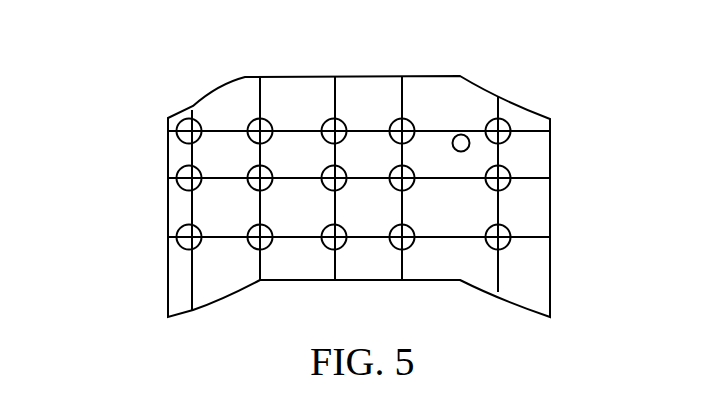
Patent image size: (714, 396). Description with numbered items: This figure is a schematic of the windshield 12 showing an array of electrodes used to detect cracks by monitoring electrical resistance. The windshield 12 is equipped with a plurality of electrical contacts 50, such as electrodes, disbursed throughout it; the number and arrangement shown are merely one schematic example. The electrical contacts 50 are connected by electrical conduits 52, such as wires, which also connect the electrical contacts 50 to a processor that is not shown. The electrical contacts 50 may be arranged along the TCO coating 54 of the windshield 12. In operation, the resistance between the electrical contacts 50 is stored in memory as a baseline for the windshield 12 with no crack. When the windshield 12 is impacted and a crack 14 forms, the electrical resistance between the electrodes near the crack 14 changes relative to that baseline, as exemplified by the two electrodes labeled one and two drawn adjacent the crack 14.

The windshield 12 is at (307, 97).
The TCO coating 54 is at (380, 92).
The crack 14 is at (467, 134).
The electrical contacts 50 is at (168, 127).
The electrical conduits 52 is at (334, 268).